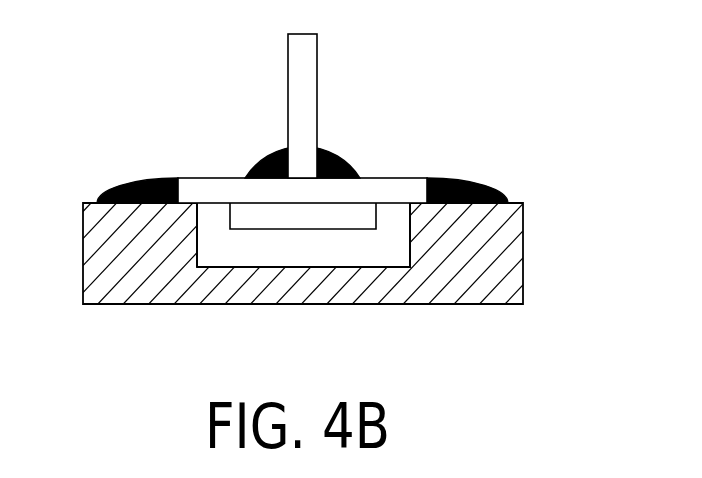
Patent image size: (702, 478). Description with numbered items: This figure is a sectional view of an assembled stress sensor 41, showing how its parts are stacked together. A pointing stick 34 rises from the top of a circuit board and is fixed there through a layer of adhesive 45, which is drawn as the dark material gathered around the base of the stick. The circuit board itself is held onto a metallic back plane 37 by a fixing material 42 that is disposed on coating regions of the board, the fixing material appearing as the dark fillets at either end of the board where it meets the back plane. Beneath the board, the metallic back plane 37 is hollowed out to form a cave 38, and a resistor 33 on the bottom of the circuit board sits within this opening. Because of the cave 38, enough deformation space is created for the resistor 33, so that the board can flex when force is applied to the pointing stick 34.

The package structure 41 is at (163, 52).
The pointing stick 34 is at (312, 70).
The adhesive 45 is at (345, 158).
The fixing material 42 is at (485, 195).
The resistor 33 is at (235, 217).
The metallic back plane 37 is at (513, 257).
The cave 38 is at (281, 257).